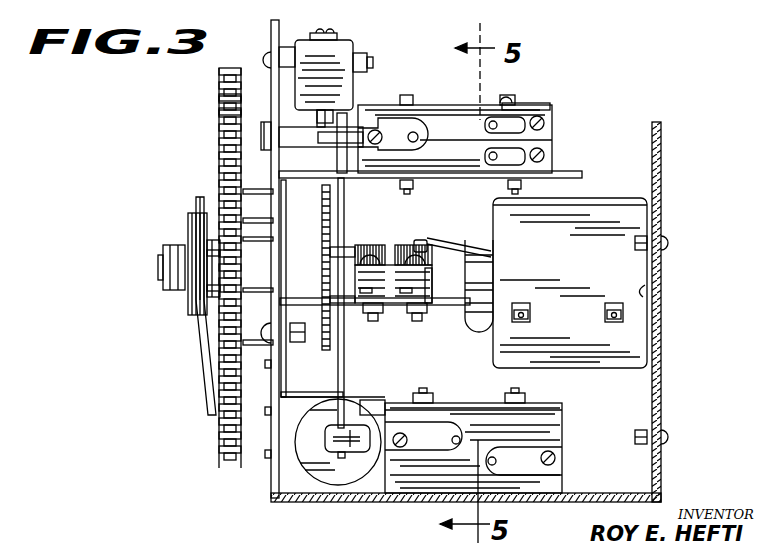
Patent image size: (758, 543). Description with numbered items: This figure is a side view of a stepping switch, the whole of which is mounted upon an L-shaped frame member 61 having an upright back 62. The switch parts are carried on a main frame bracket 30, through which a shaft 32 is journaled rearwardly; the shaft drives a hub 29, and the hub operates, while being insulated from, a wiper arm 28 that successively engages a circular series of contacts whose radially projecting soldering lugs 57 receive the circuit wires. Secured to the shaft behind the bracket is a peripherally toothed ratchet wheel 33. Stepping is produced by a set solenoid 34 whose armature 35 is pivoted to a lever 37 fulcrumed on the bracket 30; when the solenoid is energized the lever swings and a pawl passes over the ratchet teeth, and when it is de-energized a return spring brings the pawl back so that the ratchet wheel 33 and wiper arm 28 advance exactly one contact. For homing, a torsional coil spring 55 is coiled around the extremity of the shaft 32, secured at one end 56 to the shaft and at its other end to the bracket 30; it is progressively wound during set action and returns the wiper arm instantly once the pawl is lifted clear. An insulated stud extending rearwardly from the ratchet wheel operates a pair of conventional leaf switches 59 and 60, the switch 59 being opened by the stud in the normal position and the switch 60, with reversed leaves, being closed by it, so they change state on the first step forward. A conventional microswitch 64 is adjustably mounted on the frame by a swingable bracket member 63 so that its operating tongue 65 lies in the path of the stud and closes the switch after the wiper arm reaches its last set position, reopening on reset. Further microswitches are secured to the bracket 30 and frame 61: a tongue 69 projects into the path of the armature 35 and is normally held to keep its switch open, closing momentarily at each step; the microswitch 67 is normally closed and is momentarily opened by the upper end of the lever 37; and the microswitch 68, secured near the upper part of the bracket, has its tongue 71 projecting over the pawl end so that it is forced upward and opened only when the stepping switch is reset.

The wiper arm 28 is at (200, 375).
The hub 29 is at (185, 302).
The main frame bracket 30 is at (217, 190).
The shaft 32 is at (344, 247).
The ratchet wheel 33 is at (345, 357).
The set solenoid 34 is at (345, 490).
The armature 35 is at (313, 470).
The lever 37 is at (348, 388).
The torsional coil spring 55 is at (392, 245).
The spring end 56 is at (425, 240).
The soldering lugs 57 is at (221, 112).
The leaf switch 59 is at (432, 286).
The leaf switch 60 is at (393, 308).
The L-shaped frame member 61 is at (603, 493).
The upright back 62 is at (660, 390).
The swingable bracket member 63 is at (650, 298).
The microswitch 64 is at (482, 306).
The operating tongue 65 is at (496, 247).
The microswitch 67 is at (553, 107).
The microswitch 68 is at (340, 52).
The tongue 69 is at (378, 495).
The tongue 71 is at (349, 125).